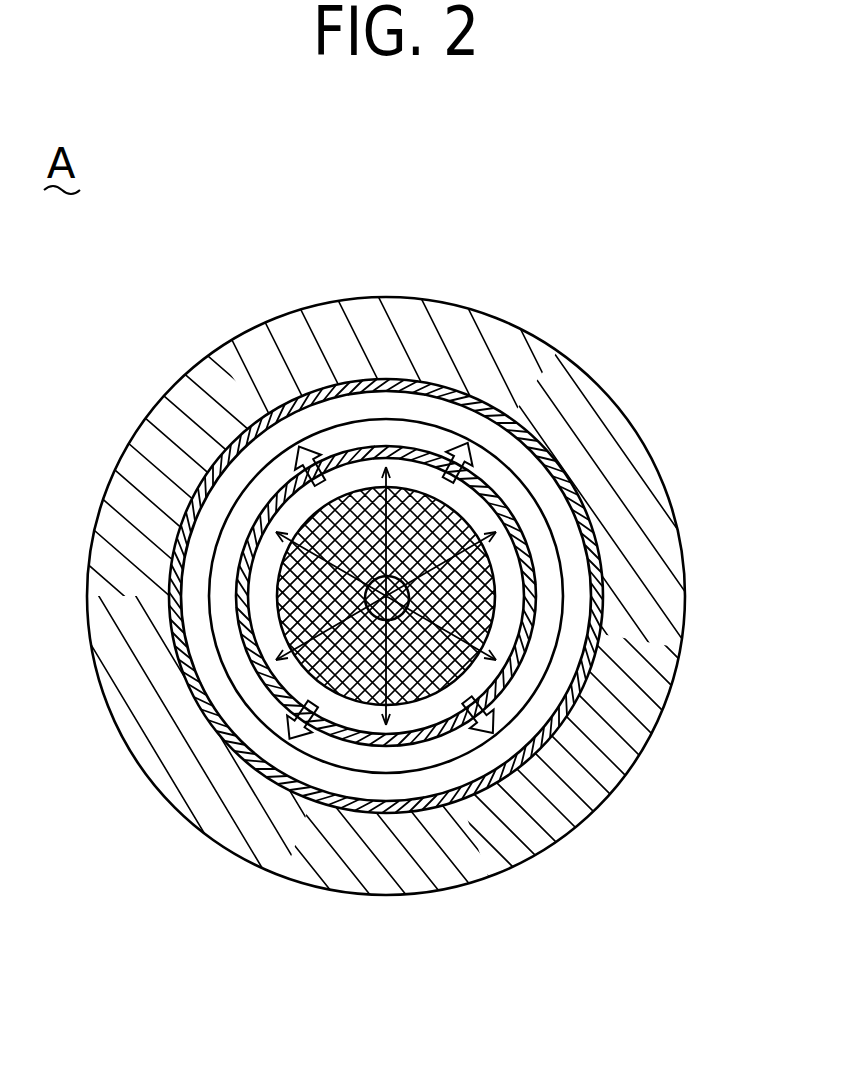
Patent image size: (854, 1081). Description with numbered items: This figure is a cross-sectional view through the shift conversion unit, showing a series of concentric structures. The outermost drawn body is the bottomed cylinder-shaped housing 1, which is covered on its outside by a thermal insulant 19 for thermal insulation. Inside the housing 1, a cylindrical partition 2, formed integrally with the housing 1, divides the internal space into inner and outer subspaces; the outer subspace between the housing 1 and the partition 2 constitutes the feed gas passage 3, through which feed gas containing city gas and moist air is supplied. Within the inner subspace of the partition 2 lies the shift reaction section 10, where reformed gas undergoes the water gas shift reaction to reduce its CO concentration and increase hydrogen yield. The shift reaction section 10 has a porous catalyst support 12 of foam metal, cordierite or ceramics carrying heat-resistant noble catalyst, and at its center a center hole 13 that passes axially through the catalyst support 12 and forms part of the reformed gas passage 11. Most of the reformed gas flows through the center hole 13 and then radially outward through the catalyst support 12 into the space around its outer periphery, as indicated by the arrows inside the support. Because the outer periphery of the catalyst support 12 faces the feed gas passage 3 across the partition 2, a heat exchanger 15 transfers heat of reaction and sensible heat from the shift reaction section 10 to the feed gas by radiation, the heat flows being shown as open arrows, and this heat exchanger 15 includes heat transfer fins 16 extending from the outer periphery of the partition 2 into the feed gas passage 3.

The housing 1 is at (377, 387).
The partition 2 is at (418, 732).
The feed gas passage 3 is at (205, 672).
The shift reaction section 10 is at (497, 586).
The reformed gas passage 11 is at (430, 477).
The catalyst support 12 is at (360, 672).
The center hole 13 is at (393, 617).
The heat exchanger 15 is at (209, 564).
The heat transfer fins 16 is at (280, 470).
The thermal insulant 19 is at (618, 748).